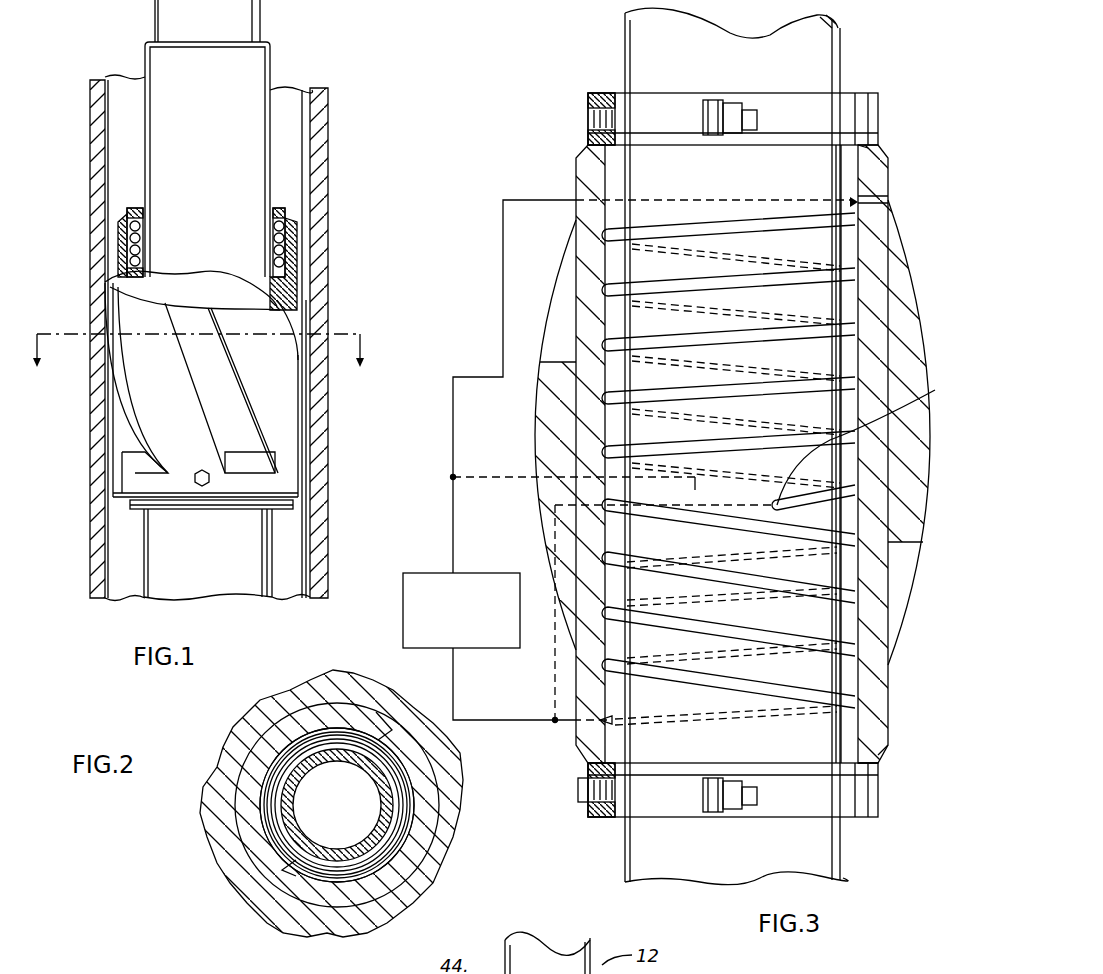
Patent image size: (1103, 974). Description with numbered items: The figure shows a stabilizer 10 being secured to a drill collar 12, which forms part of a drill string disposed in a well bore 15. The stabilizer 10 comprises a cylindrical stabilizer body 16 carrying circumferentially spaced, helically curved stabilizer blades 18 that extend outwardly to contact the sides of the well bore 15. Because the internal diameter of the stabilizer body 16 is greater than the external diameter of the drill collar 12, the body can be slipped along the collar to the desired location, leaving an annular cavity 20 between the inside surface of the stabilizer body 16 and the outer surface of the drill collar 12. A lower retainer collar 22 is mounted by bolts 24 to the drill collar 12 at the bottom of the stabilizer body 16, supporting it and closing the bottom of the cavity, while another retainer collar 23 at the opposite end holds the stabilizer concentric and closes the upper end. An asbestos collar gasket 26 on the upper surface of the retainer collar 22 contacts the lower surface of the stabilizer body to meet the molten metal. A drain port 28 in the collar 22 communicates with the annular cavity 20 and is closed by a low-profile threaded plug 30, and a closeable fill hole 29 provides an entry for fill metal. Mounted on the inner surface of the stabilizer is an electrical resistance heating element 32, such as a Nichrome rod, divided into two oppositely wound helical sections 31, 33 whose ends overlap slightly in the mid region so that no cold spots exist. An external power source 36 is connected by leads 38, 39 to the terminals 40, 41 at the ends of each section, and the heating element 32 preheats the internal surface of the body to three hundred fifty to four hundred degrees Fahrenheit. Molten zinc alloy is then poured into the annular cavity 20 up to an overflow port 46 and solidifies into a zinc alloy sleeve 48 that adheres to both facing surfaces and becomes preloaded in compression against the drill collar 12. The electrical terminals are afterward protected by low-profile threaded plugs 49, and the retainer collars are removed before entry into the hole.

In FIG. 1, the stabilizer 10 is at (308, 465).
In FIG. 2, the stabilizer 10 is at (248, 862).
In FIG. 3, the stabilizer 10 is at (912, 274).
In FIG. 1, the drill collar 12 is at (272, 122).
In FIG. 2, the drill collar 12 is at (278, 775).
In FIG. 3, the drill collar 12 is at (842, 626).
In FIG. 1, the well bore 15 is at (320, 186).
In FIG. 2, the well bore 15 is at (228, 767).
In FIG. 1, the stabilizer body 16 is at (280, 441).
In FIG. 2, the stabilizer body 16 is at (292, 870).
In FIG. 3, the stabilizer body 16 is at (892, 680).
In FIG. 1, the stabilizer blades 18 is at (237, 445).
In FIG. 2, the stabilizer blades 18 is at (337, 896).
In FIG. 3, the stabilizer blades 18 is at (905, 565).
In FIG. 1, the annular cavity 20 is at (290, 241).
In FIG. 2, the annular cavity 20 is at (265, 804).
In FIG. 3, the annular cavity 20 is at (850, 170).
In FIG. 3, the lower retainer collar 22 is at (878, 798).
In FIG. 3, the retainer collar 23 is at (877, 106).
In FIG. 3, the bolts 24 is at (713, 812).
In FIG. 1, the asbestos collar gasket 26 is at (300, 512).
In FIG. 3, the asbestos collar gasket 26 is at (878, 768).
In FIG. 3, the drain port 28 is at (603, 808).
In FIG. 3, the fill hole 29 is at (587, 112).
In FIG. 3, the threaded plug 30 is at (580, 793).
In FIG. 3, the helical section 31 is at (850, 488).
In FIG. 1, the electrical resistance heating element 32 is at (125, 230).
In FIG. 3, the electrical resistance heating element 32 is at (862, 257).
In FIG. 3, the helical section 33 is at (843, 533).
In FIG. 3, the power source 36 is at (478, 573).
In FIG. 3, the lead 38 is at (457, 518).
In FIG. 3, the lead 39 is at (494, 722).
In FIG. 3, the terminal 40 is at (852, 221).
In FIG. 3, the terminal 41 is at (865, 440).
In FIG. 3, the overflow port 46 is at (886, 198).
In FIG. 1, the zinc alloy sleeve 48 is at (268, 293).
In FIG. 1, the threaded plugs 49 is at (195, 478).